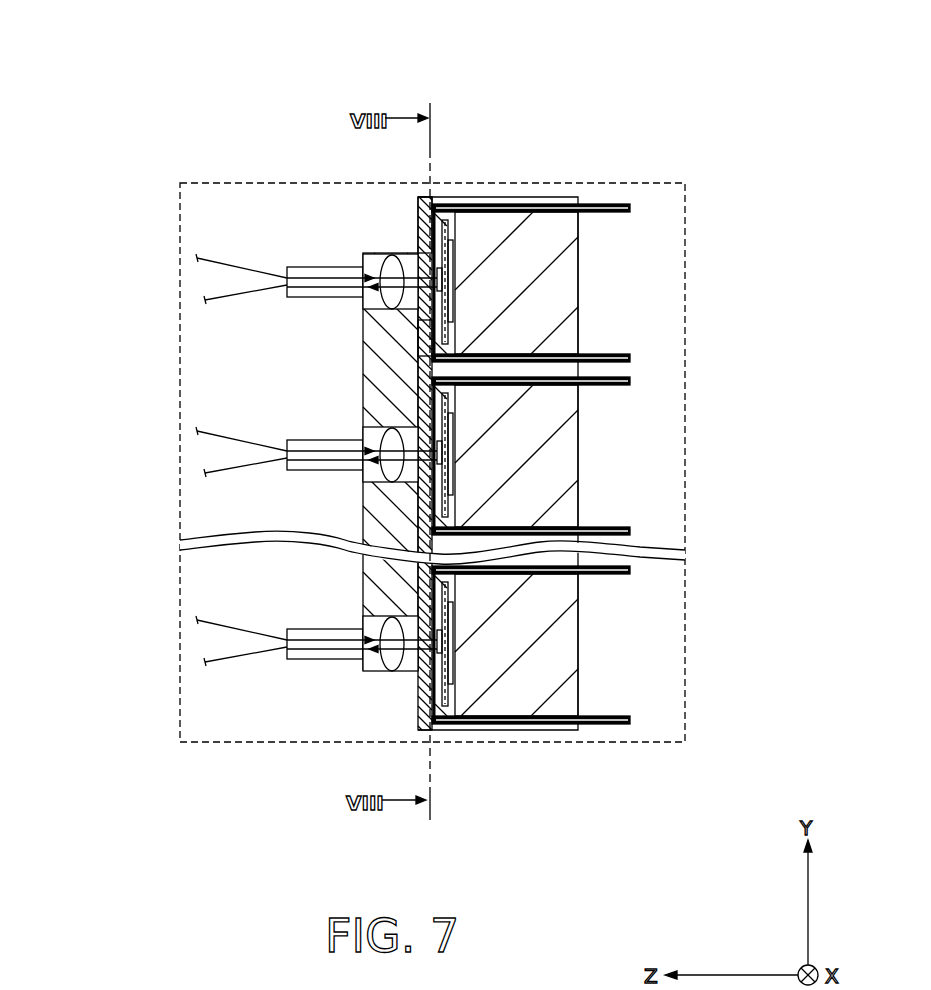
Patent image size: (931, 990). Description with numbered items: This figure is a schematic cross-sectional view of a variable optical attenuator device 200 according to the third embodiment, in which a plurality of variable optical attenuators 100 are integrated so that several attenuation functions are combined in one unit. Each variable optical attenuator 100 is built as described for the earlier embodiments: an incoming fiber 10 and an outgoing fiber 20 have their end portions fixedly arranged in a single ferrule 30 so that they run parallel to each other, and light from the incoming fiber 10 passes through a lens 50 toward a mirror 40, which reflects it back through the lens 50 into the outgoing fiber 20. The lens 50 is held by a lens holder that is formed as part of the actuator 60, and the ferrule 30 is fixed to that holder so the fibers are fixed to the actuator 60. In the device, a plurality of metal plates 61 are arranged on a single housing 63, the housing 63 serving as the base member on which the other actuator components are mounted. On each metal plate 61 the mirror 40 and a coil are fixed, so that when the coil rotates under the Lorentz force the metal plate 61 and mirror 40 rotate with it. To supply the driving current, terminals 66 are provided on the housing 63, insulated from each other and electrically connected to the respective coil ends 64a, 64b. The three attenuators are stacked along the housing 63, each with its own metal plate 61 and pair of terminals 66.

The variable optical attenuator device 200 is at (186, 128).
The variable optical attenuator 100 is at (221, 457).
The incoming fiber 10 is at (201, 239).
The outgoing fiber 20 is at (200, 326).
The ferrule 30 is at (300, 256).
The mirror 40 is at (418, 237).
The lens 50 is at (362, 262).
The actuator 60 is at (580, 400).
The metal plate 61 is at (447, 240).
The housing 63 is at (540, 284).
The end of the coil 64a is at (418, 215).
The end of the coil 64b is at (418, 348).
The terminal 66 is at (607, 203).